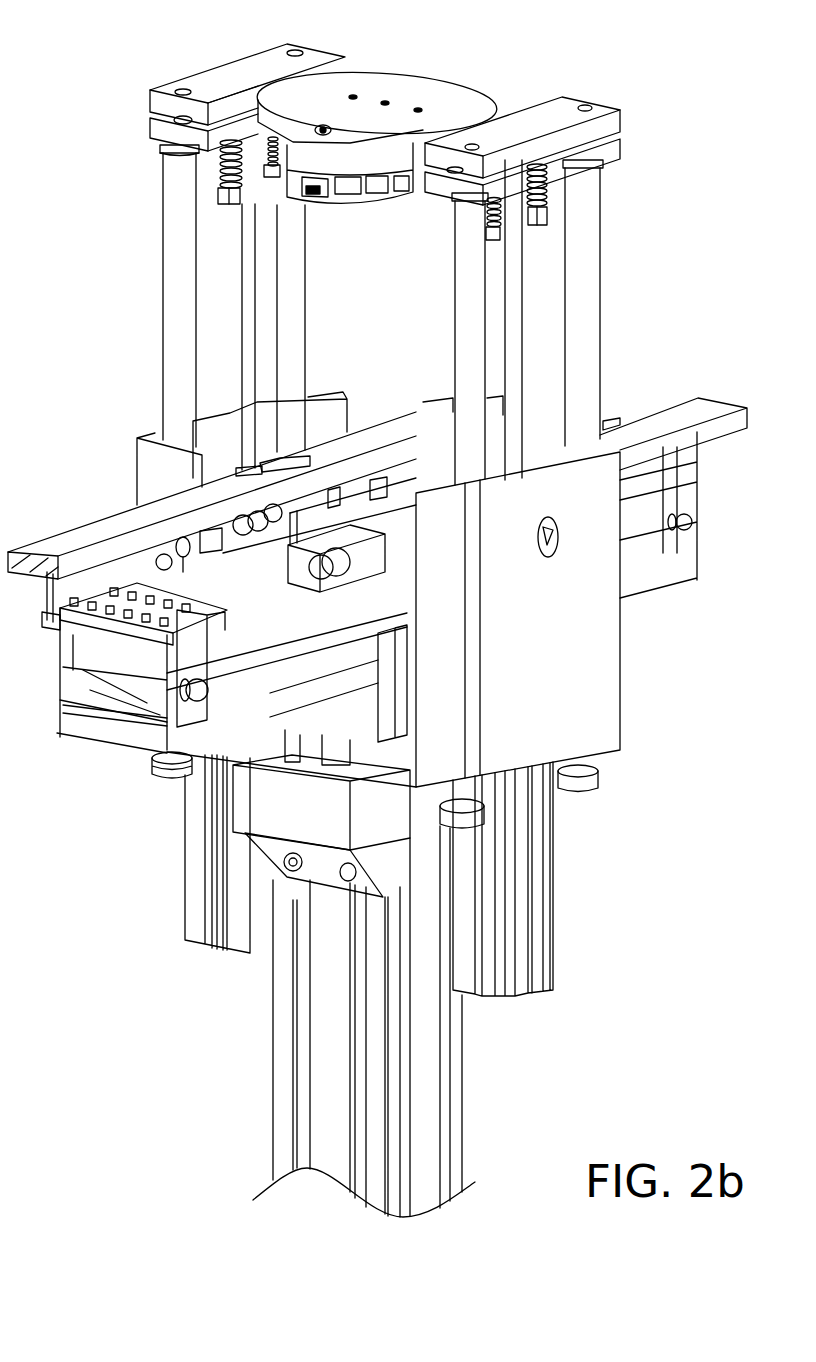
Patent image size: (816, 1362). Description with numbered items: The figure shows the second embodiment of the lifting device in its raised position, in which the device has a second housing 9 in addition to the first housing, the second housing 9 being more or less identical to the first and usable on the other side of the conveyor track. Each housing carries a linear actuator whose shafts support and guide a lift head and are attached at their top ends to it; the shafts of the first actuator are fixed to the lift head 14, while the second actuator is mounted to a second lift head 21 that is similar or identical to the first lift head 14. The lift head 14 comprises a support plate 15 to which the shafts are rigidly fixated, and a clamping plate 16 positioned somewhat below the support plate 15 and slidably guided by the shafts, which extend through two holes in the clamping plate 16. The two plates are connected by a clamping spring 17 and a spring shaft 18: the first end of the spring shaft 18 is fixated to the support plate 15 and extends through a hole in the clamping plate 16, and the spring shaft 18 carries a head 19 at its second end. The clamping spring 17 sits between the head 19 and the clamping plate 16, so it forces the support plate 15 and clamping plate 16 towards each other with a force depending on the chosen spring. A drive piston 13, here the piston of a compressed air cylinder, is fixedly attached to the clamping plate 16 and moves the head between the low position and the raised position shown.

The second housing 9 is at (150, 473).
The drive piston 13 is at (560, 290).
The lift head 14 is at (650, 117).
The support plate 15 is at (565, 103).
The clamping plate 16 is at (618, 147).
The clamping spring 17 is at (548, 222).
The spring shaft 18 is at (548, 192).
The head 19 is at (522, 262).
The second lift head 21 is at (150, 72).